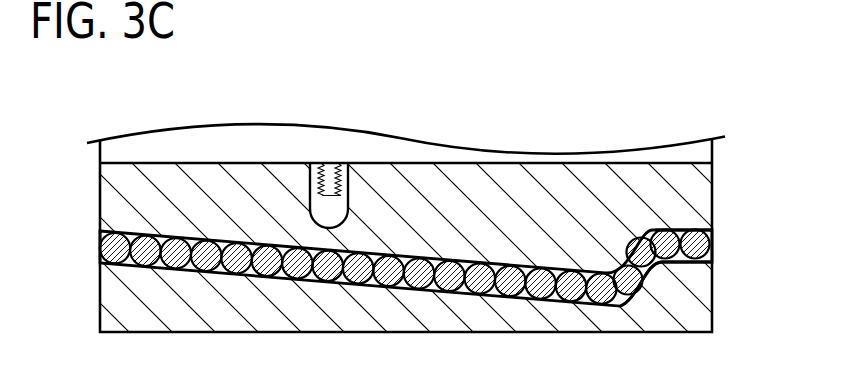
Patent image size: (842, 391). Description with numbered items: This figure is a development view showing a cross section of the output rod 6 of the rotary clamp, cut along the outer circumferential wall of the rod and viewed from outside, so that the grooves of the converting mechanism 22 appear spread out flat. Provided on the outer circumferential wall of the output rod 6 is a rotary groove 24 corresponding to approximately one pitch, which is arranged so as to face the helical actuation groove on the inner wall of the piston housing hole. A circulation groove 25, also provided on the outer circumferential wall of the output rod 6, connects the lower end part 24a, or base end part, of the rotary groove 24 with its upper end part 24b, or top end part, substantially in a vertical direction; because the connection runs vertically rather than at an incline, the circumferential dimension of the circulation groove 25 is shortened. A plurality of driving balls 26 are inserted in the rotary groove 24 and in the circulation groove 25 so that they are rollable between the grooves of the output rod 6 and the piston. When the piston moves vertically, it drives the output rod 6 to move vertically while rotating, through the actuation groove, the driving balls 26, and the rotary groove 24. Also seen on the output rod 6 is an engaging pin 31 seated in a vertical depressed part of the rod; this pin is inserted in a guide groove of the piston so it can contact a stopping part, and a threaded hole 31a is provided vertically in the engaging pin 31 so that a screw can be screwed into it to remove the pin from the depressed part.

The output rod 6 is at (476, 160).
The converting mechanism 22 is at (322, 288).
The rotary groove 24 is at (485, 283).
The lower end part of the rotary groove 24a is at (600, 303).
The upper end part of the rotary groove 24b is at (660, 228).
The circulation groove 25 is at (633, 307).
The driving balls 26 is at (712, 243).
The engaging pin 31 is at (345, 160).
The threaded hole 31a is at (330, 162).